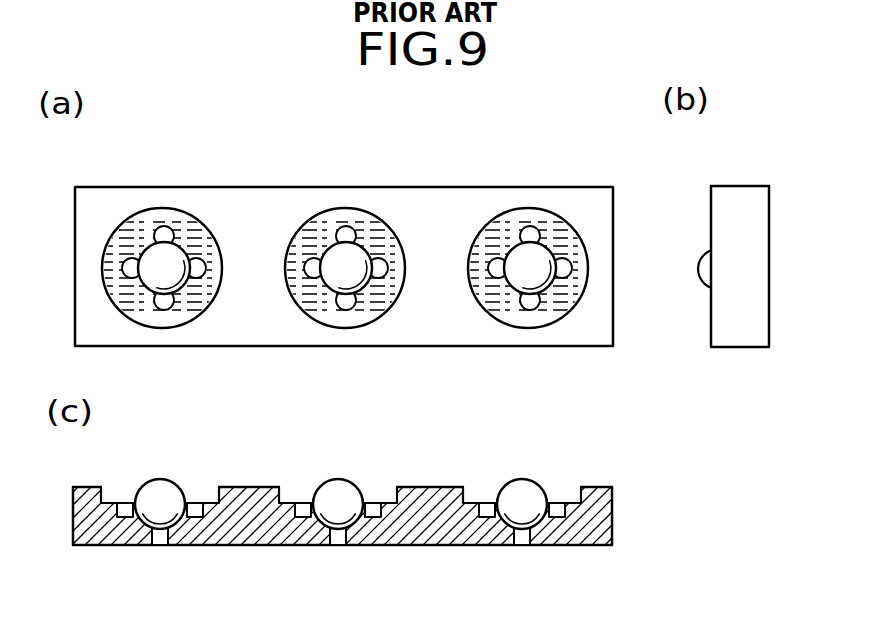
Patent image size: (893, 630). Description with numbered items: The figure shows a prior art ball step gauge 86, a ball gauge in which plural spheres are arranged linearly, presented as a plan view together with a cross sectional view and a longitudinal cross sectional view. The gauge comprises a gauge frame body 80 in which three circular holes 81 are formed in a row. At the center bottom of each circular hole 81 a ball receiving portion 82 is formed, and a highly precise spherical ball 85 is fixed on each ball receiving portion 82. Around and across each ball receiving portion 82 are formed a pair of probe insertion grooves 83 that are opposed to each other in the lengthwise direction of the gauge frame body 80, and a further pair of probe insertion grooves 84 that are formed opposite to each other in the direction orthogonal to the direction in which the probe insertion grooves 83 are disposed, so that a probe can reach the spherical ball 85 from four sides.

The gauge frame body 80 is at (439, 203).
The circular hole 81 is at (322, 222).
The ball receiving portion 82 is at (183, 546).
The probe insertion groove 83 is at (124, 270).
The probe insertion groove 84 is at (165, 230).
The spherical ball 85 is at (148, 258).
The ball step gauge 86 is at (259, 178).